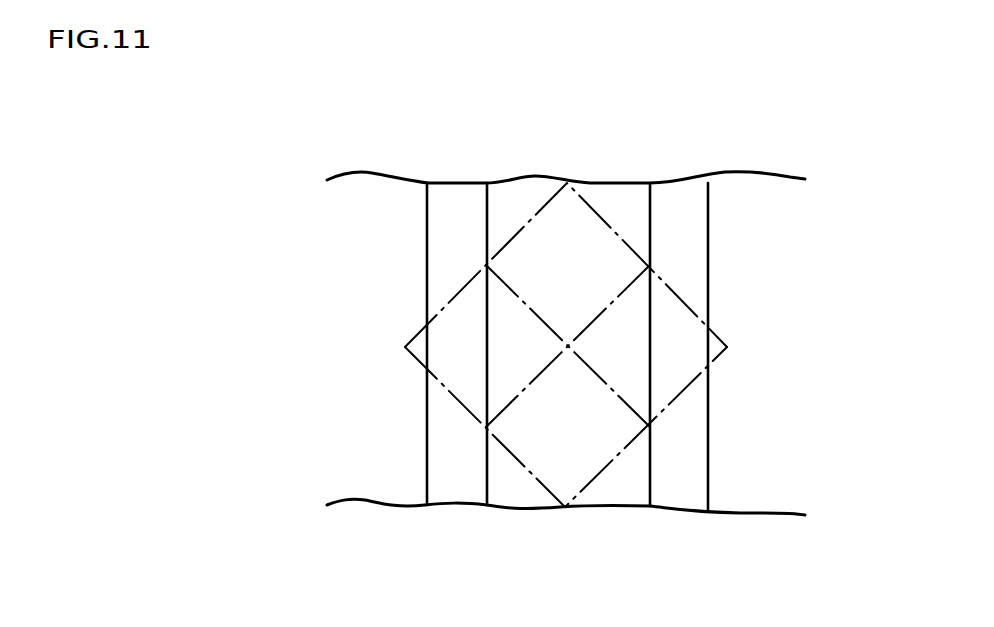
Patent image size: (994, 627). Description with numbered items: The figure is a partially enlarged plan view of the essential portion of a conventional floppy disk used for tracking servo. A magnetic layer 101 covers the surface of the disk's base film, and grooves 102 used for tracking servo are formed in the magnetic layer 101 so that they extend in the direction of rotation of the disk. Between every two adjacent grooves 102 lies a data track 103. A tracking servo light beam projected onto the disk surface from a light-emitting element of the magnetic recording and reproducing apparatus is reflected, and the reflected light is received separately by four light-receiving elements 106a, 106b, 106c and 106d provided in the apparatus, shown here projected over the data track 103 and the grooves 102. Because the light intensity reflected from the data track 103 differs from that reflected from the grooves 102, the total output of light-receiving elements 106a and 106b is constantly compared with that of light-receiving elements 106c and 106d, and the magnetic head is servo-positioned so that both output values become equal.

The magnetic layer 101 is at (775, 240).
The grooves 102 is at (442, 500).
The data track 103 is at (647, 518).
The light-receiving element 106a is at (566, 265).
The light-receiving element 106b is at (568, 346).
The light-receiving element 106c is at (566, 427).
The light-receiving element 106d is at (568, 346).